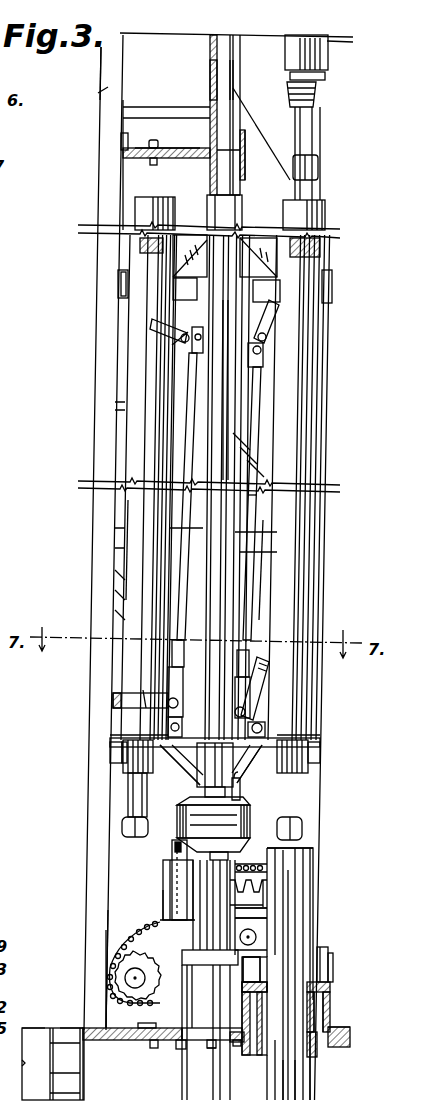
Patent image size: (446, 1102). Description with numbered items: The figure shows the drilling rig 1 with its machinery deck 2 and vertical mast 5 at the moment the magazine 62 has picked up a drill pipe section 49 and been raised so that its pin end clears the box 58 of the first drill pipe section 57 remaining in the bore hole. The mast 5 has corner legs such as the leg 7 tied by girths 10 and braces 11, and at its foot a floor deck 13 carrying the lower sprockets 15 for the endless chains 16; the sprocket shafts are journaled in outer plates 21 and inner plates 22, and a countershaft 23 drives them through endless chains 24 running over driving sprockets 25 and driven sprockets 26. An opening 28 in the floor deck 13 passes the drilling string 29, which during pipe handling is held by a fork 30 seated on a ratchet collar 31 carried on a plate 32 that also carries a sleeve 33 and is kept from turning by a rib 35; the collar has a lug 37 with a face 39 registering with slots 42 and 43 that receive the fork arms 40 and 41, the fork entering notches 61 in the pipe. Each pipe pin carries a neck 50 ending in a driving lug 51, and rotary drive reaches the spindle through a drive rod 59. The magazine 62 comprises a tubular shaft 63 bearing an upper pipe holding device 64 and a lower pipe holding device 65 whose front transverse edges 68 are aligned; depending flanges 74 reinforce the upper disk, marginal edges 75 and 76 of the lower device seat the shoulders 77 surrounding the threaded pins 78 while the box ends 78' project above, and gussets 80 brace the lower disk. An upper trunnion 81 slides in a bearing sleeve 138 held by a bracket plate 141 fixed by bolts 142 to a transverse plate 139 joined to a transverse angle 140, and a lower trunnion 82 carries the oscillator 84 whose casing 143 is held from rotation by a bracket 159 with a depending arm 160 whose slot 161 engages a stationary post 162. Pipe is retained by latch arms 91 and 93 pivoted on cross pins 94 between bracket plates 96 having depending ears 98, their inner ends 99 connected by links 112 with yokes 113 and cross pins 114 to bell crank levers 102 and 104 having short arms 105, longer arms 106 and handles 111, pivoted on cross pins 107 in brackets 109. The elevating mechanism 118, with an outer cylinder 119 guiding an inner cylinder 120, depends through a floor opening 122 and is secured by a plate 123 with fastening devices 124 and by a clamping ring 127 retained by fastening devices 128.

The rig 1 is at (80, 1022).
The machinery deck 2 is at (40, 1028).
The mast 5 is at (98, 188).
The corner leg 7 is at (92, 79).
The girths 10 is at (265, 550).
The braces 11 is at (263, 128).
The floor deck 13 is at (115, 1041).
The lower sprockets 15 is at (258, 908).
The endless chains 16 is at (210, 79).
The outer plates 21 is at (108, 922).
The inner plates 22 is at (260, 920).
The countershaft 23 is at (128, 973).
The endless chains 24 is at (128, 942).
The driving sprockets 25 is at (252, 882).
The driven sprockets 26 is at (118, 982).
The opening 28 is at (322, 1043).
The drilling string 29 is at (318, 1088).
The fork 30 is at (333, 977).
The ratchet collar 31 is at (333, 1003).
The plate 32 is at (350, 1032).
The sleeve 33 is at (313, 1057).
The rib 35 is at (347, 1027).
The lug 37 is at (328, 947).
The face 39 is at (333, 960).
The arm of fork 40 is at (252, 968).
The arm of fork 41 is at (330, 987).
The slot 42 is at (248, 983).
The slot 43 is at (328, 972).
The drill pipe sections 49 is at (127, 567).
The neck 50 is at (133, 780).
The driving lug 51 is at (122, 825).
The first drill pipe section 57 is at (273, 1073).
The box 58 is at (315, 848).
The drive rod 59 is at (318, 137).
The notches 61 is at (140, 243).
The magazine 62 is at (339, 281).
The vertical shaft 63 is at (227, 437).
The upper pipe holding device 64 is at (118, 281).
The lower pipe holding device 65 is at (113, 752).
The front transverse edges 68 is at (260, 273).
The depending flanges 74 is at (123, 292).
The marginal edge 75 is at (133, 730).
The marginal edge 76 is at (163, 767).
The shoulders 77 is at (113, 713).
The threaded pins 78 is at (217, 485).
The box ends 78' is at (325, 215).
The gussets 80 is at (238, 770).
The upper trunnion 81 is at (233, 88).
The lower trunnion 82 is at (240, 792).
The oscillator 84 is at (177, 820).
The upper pivoted arm 91 is at (152, 329).
The upper pivoted arm 93 is at (273, 320).
The cross pin 94 is at (268, 345).
The bracket plate 96 is at (187, 307).
The depending ears 98 is at (188, 348).
The inner ends 99 is at (267, 353).
The bell crank lever 102 is at (130, 693).
The bell crank lever 104 is at (267, 682).
The short arms 105 is at (260, 715).
The longer arms 106 is at (137, 700).
The cross pins 107 is at (266, 720).
The bracket 109 is at (307, 727).
The handles 111 is at (110, 700).
The links 112 is at (263, 517).
The yokes 113 is at (263, 368).
The cross pins 114 is at (198, 330).
The elevating mechanism 118 is at (177, 1091).
The outer cylinder 119 is at (193, 1070).
The inner cylinder 120 is at (227, 903).
The opening 122 is at (152, 1046).
The plate 123 is at (149, 1024).
The fastening devices 124 is at (148, 1060).
The clamping ring 127 is at (225, 1052).
The fastening devices 128 is at (213, 1057).
The bearing sleeve 138 is at (242, 180).
The transverse plate 139 is at (173, 160).
The transverse angle 140 is at (121, 138).
The bracket plate 141 is at (190, 150).
The bolts 142 is at (152, 162).
The casing 143 is at (260, 817).
The bracket 159 is at (175, 847).
The depending arm 160 is at (180, 880).
The slot 161 is at (172, 867).
The stationary post 162 is at (163, 902).